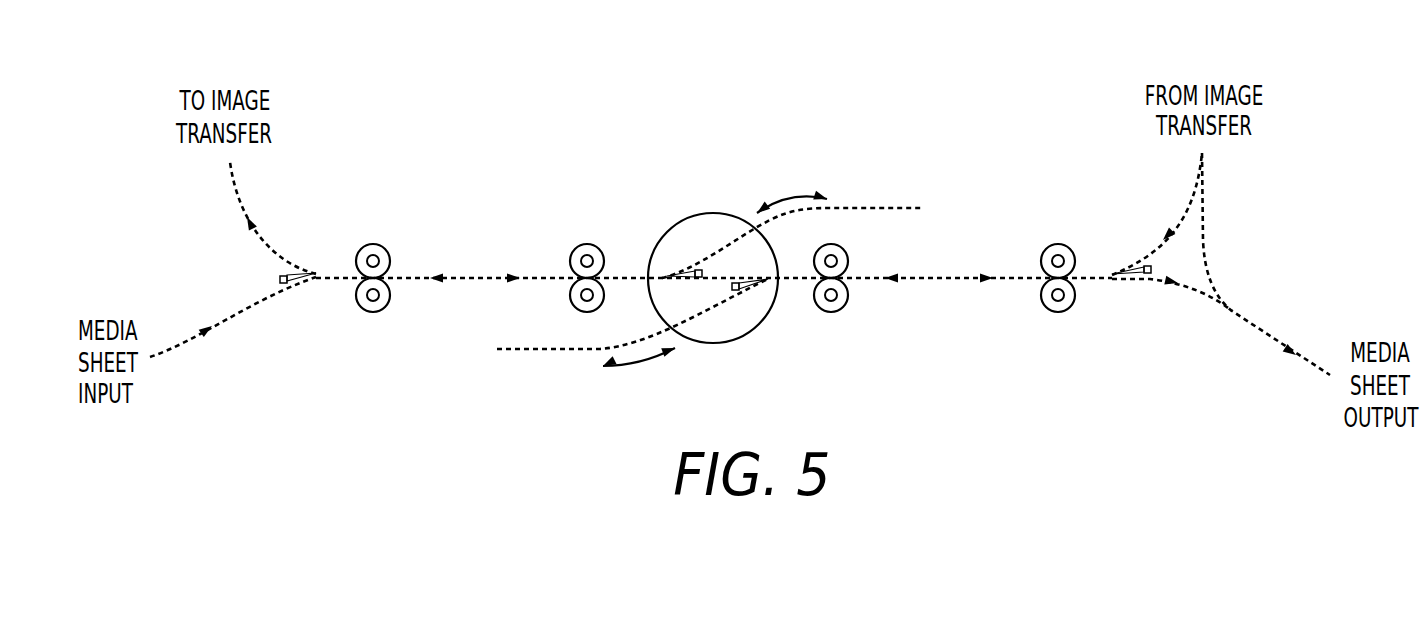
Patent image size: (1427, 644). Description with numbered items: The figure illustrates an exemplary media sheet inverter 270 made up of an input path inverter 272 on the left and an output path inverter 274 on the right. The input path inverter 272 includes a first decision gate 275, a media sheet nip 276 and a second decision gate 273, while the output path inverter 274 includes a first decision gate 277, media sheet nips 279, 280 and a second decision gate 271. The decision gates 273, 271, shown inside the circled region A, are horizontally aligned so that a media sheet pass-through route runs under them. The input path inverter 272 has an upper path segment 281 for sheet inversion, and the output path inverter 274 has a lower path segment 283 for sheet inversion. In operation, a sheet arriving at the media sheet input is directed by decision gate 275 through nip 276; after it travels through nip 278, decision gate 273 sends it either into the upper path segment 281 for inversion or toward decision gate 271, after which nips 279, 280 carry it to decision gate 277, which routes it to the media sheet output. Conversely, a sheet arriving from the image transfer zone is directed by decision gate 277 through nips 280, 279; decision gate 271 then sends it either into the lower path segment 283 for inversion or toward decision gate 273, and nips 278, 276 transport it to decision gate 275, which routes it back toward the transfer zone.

The inverter 270 is at (349, 62).
The second decision gate 271 is at (748, 289).
The input path inverter 272 is at (232, 255).
The second decision gate 273 is at (687, 268).
The output path inverter 274 is at (1235, 230).
The first decision gate 275 is at (290, 284).
The media sheet nip 276 is at (367, 332).
The first decision gate 277 is at (1133, 275).
The media sheet nip 278 is at (583, 235).
The media sheet nip 279 is at (834, 322).
The media sheet nip 280 is at (1059, 237).
The upper path segment 281 is at (866, 208).
The lower path segment 283 is at (547, 352).
The detail region of media guides A is at (740, 338).